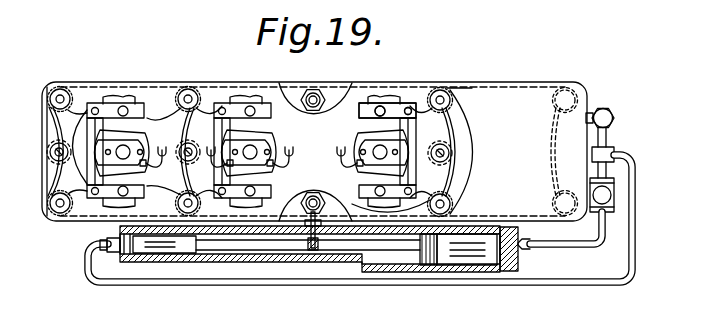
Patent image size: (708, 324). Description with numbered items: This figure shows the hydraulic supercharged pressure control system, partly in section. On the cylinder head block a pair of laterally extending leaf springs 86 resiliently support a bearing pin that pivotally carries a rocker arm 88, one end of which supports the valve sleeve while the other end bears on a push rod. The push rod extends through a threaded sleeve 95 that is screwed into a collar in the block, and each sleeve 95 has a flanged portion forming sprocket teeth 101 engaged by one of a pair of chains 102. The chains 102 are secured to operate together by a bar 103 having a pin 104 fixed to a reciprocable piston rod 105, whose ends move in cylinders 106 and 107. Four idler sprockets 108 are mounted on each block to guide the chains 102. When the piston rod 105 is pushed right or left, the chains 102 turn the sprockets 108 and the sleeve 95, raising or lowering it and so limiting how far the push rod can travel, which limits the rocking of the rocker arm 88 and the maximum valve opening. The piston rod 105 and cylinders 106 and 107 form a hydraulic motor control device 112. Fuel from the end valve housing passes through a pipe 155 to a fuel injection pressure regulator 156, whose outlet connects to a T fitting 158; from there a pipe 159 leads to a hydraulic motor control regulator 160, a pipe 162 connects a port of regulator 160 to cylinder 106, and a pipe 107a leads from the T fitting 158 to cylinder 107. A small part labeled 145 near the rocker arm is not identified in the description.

The leaf springs 86 is at (396, 112).
The rocker arm 88 is at (136, 136).
The threaded sleeve 95 is at (50, 139).
The sprocket teeth 101 is at (48, 153).
The chains 102 is at (52, 185).
The bar 103 is at (333, 218).
The pin 104 is at (309, 224).
The piston rod 105 is at (240, 244).
The cylinder 106 is at (456, 258).
The cylinder 107 is at (167, 247).
The pipe 107a is at (637, 273).
The idler sprockets 108 is at (58, 88).
The hydraulic motor control device 112 is at (346, 270).
The hook spring wire 145 is at (145, 170).
The pipe 155 is at (594, 110).
The fuel injection pressure regulator 156 is at (612, 113).
The T fitting 158 is at (616, 149).
The pipe 159 is at (617, 169).
The hydraulic motor control regulator 160 is at (613, 195).
The pipe 162 is at (602, 250).